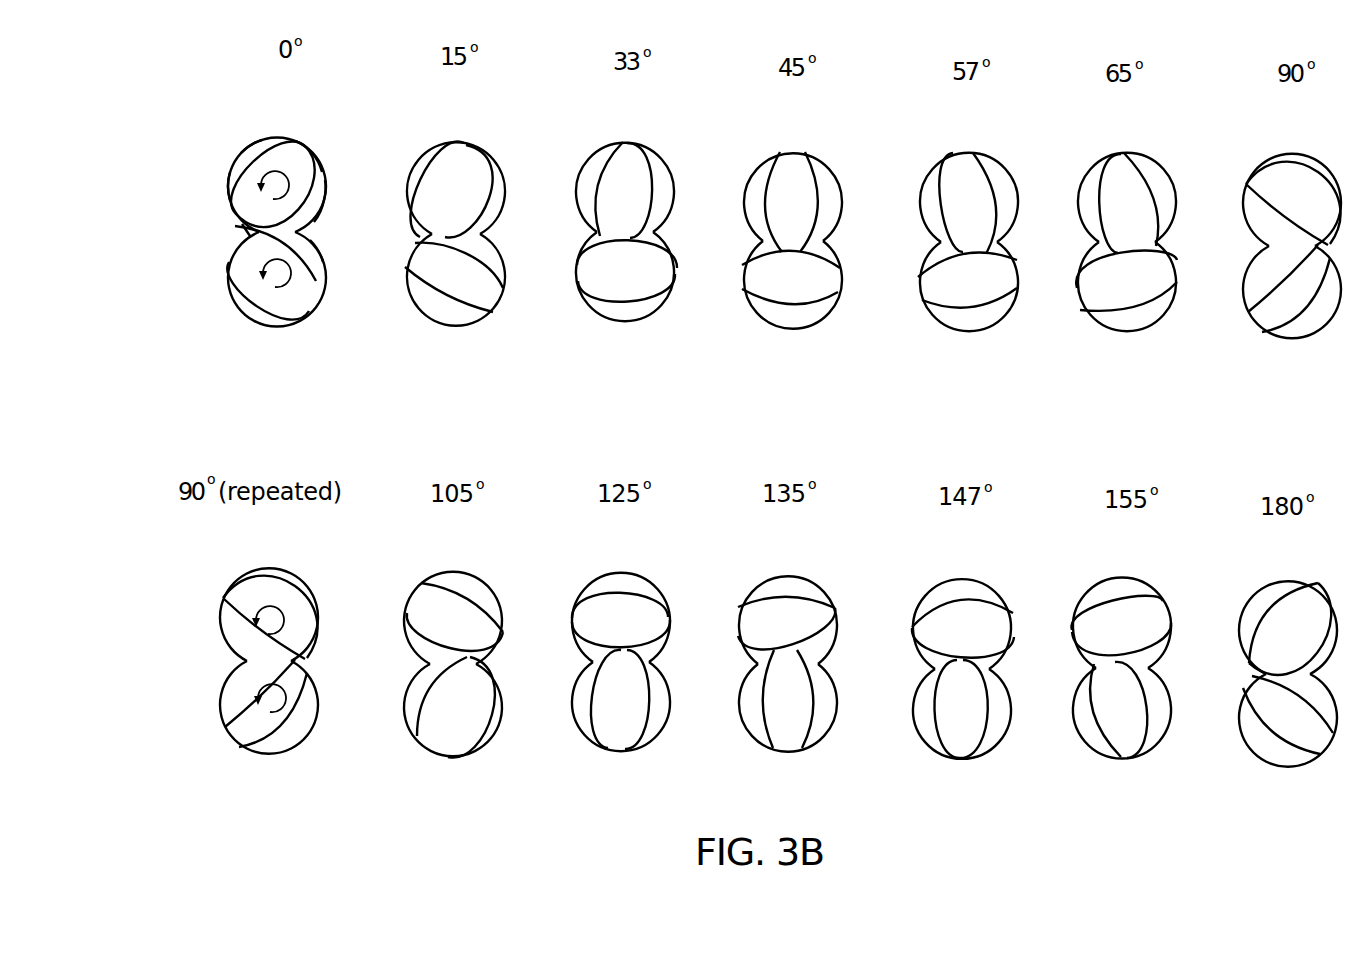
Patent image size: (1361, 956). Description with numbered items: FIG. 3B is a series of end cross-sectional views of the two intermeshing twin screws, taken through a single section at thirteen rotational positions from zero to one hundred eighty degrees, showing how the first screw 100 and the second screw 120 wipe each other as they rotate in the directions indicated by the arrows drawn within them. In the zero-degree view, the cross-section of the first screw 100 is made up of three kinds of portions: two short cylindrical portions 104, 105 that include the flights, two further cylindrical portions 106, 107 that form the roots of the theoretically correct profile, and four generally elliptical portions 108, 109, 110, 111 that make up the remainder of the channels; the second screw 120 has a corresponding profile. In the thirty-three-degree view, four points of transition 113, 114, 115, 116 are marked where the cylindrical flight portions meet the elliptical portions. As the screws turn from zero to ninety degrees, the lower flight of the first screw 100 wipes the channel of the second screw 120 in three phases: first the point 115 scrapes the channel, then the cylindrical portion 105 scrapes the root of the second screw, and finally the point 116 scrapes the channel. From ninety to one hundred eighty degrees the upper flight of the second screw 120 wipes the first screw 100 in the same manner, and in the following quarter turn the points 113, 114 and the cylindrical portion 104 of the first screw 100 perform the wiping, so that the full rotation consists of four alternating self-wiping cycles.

The first screw 100 is at (274, 178).
The short cylindrical portion 104 is at (310, 152).
The short cylindrical portion 105 is at (243, 230).
The cylindrical portion 106 is at (313, 213).
The cylindrical portion 107 is at (255, 163).
The generally elliptical portion 108 is at (310, 190).
The generally elliptical portion 109 is at (320, 252).
The generally elliptical portion 110 is at (229, 187).
The generally elliptical portion 111 is at (275, 152).
The point of transition 113 is at (612, 152).
The point of transition 114 is at (645, 152).
The point of transition 115 is at (667, 253).
The point of transition 116 is at (577, 266).
The second screw 120 is at (274, 279).